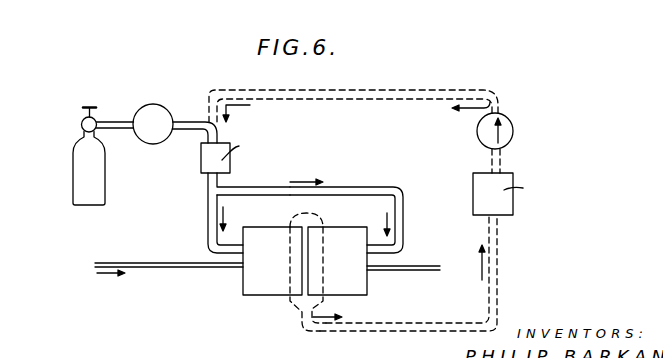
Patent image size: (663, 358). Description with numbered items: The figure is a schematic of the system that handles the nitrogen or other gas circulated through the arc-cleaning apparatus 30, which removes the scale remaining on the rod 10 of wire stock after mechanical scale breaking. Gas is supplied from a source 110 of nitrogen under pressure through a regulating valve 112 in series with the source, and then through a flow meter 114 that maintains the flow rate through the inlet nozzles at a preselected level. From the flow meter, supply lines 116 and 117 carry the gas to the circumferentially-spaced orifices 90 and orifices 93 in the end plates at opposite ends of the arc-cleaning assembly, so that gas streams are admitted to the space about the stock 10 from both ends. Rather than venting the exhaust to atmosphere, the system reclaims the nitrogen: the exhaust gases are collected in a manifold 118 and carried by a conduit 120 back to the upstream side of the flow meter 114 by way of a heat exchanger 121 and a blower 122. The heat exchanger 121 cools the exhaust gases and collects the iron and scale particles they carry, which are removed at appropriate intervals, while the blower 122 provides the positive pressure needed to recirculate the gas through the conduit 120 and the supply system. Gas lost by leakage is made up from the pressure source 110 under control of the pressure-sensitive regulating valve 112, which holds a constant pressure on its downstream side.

The rod 10 is at (175, 268).
The arc-cleaning apparatus 30 is at (333, 222).
The orifices 90 is at (246, 248).
The orifices 93 is at (367, 248).
The source of nitrogen under pressure 110 is at (78, 172).
The regulating valve 112 is at (139, 110).
The flow meter 114 is at (201, 165).
The supply line 116 is at (208, 222).
The supply line 117 is at (403, 225).
The manifold 118 is at (291, 303).
The conduit 120 is at (413, 89).
The heat exchanger 121 is at (473, 183).
The blower 122 is at (513, 130).